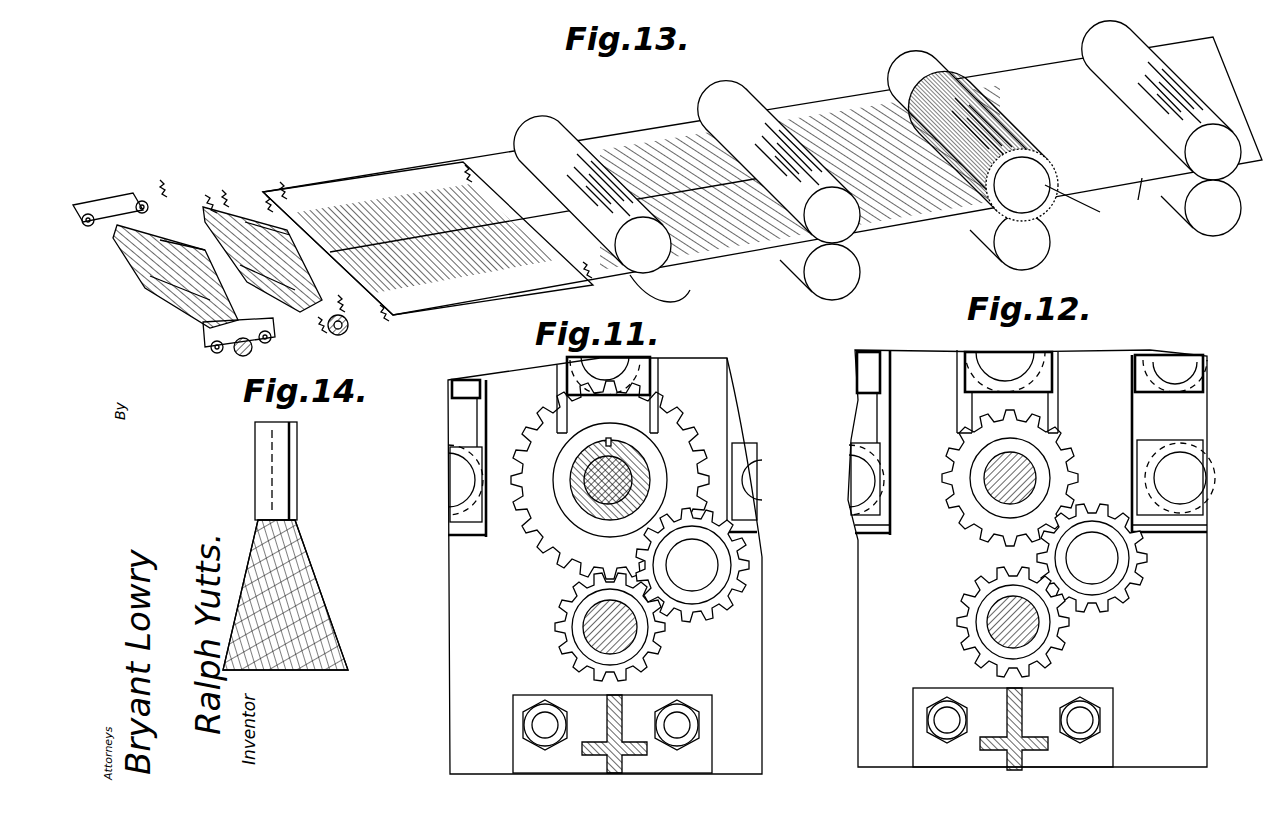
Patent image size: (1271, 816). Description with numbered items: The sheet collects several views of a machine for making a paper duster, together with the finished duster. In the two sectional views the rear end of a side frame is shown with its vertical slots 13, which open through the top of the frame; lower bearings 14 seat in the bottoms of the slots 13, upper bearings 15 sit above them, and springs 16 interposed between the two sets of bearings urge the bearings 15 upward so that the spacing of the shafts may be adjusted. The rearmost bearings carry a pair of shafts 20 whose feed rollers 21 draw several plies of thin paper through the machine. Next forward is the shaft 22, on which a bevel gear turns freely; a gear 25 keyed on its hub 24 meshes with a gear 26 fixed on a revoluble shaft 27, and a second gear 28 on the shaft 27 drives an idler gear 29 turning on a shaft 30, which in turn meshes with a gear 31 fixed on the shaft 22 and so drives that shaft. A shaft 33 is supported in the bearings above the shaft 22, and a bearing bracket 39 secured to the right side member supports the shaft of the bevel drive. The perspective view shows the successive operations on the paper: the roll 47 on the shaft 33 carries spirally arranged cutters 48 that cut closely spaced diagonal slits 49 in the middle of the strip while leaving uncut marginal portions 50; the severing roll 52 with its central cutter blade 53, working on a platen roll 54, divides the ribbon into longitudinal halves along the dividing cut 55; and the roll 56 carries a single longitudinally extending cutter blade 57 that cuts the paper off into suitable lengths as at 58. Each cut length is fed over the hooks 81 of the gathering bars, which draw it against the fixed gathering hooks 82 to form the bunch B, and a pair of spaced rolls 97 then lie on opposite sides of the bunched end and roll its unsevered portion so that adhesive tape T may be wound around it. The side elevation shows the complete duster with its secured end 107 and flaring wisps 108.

In FIG. 11, the vertical slots 13 is at (468, 447).
In FIG. 12, the vertical slots 13 is at (1148, 430).
In FIG. 11, the bearings 14 is at (450, 520).
In FIG. 12, the bearings 14 is at (1150, 530).
In FIG. 11, the upper bearings 15 is at (462, 386).
In FIG. 12, the upper bearings 15 is at (1055, 360).
In FIG. 11, the springs 16 is at (450, 425).
In FIG. 12, the springs 16 is at (1148, 398).
In FIG. 12, the shafts 20 is at (1185, 480).
In FIG. 13, the feed rollers 21 is at (1095, 43).
In FIG. 13, the shaft 22 is at (1050, 252).
In FIG. 11, the shaft 22 is at (617, 478).
In FIG. 12, the shaft 22 is at (1000, 490).
In FIG. 11, the hub 24 is at (590, 497).
In FIG. 11, the gear 25 is at (560, 558).
In FIG. 11, the gear 26 is at (563, 630).
In FIG. 11, the revoluble shaft 27 is at (597, 640).
In FIG. 12, the second gear 28 is at (1052, 645).
In FIG. 11, the idler gear 29 is at (703, 617).
In FIG. 12, the idler gear 29 is at (1110, 607).
In FIG. 11, the shaft 30 is at (700, 577).
In FIG. 12, the shaft 30 is at (1095, 572).
In FIG. 12, the gear 31 is at (1000, 530).
In FIG. 11, the shaft 33 is at (613, 365).
In FIG. 12, the shaft 33 is at (995, 365).
In FIG. 11, the bearing bracket 39 is at (705, 752).
In FIG. 12, the bearing bracket 39 is at (937, 745).
In FIG. 13, the roll 47 is at (1093, 201).
In FIG. 13, the spirally arranged cutters 48 is at (965, 105).
In FIG. 13, the diagonal slits 49 is at (488, 232).
In FIG. 13, the uncut marginal portions 50 is at (420, 150).
In FIG. 13, the severing or dividing roll 52 is at (808, 256).
In FIG. 13, the central cutter blade 53 is at (700, 130).
In FIG. 13, the platen roll 54 is at (860, 272).
In FIG. 13, the dividing cut 55 is at (670, 190).
In FIG. 13, the roll 56 is at (668, 262).
In FIG. 13, the cutter blade 57 is at (627, 275).
In FIG. 13, the cut-off 58 is at (358, 160).
In FIG. 13, the hooks 81 is at (475, 165).
In FIG. 13, the fixed gathering hooks 82 is at (178, 183).
In FIG. 13, the rolls 97 is at (148, 208).
In FIG. 13, the secured end 107 is at (246, 352).
In FIG. 14, the secured end 107 is at (290, 472).
In FIG. 13, the flaring wisps 108 is at (215, 300).
In FIG. 14, the flaring wisps 108 is at (297, 548).
In FIG. 13, the adhesive tape T is at (112, 182).
In FIG. 13, the bunch B is at (275, 265).